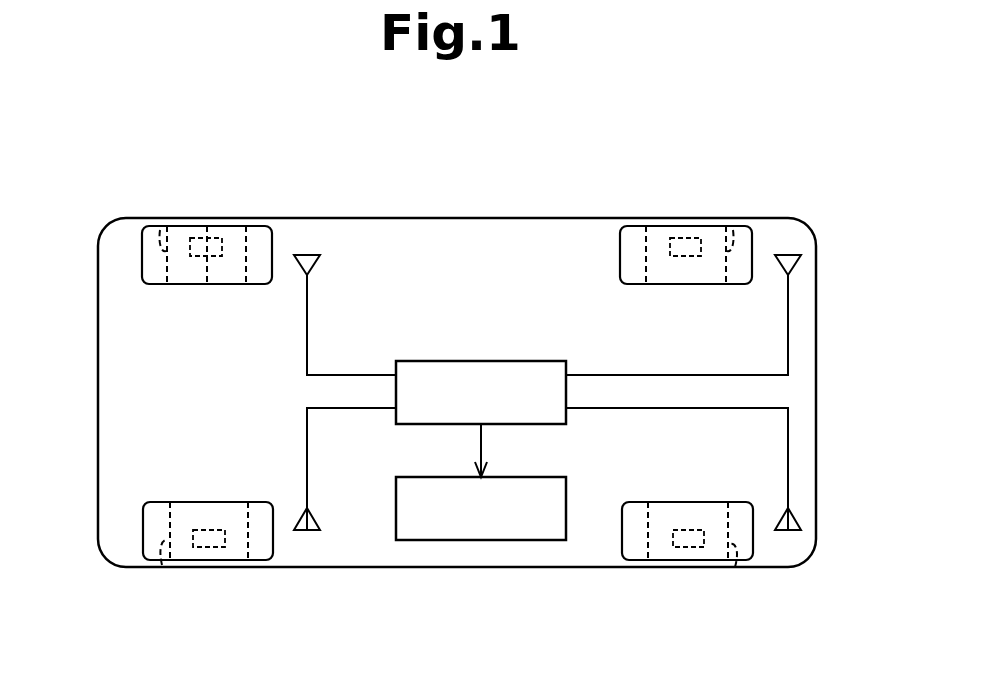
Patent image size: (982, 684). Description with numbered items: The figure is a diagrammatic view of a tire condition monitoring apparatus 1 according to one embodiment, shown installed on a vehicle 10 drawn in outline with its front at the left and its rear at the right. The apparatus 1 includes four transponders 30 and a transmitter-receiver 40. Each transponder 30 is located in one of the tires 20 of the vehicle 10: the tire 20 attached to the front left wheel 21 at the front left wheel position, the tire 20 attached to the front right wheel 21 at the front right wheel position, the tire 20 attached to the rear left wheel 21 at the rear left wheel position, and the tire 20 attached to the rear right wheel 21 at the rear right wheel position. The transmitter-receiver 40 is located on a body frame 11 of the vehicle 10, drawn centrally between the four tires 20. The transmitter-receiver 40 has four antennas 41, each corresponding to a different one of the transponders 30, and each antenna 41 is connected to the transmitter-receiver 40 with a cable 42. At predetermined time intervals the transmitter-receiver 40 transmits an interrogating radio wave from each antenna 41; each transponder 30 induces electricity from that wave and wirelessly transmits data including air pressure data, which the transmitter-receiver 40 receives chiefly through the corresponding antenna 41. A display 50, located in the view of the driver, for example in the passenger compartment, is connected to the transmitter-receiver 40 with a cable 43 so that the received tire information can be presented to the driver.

The tire condition monitoring apparatus 1 is at (815, 177).
The vehicle 10 is at (520, 218).
The body frame 11 is at (443, 218).
The tire 20 is at (261, 238).
The wheel 21 is at (160, 230).
The transponder 30 is at (207, 238).
The transmitter-receiver 40 is at (484, 360).
The antenna 41 is at (318, 263).
The cable 42 is at (307, 323).
The cable 43 is at (482, 441).
The display 50 is at (566, 503).